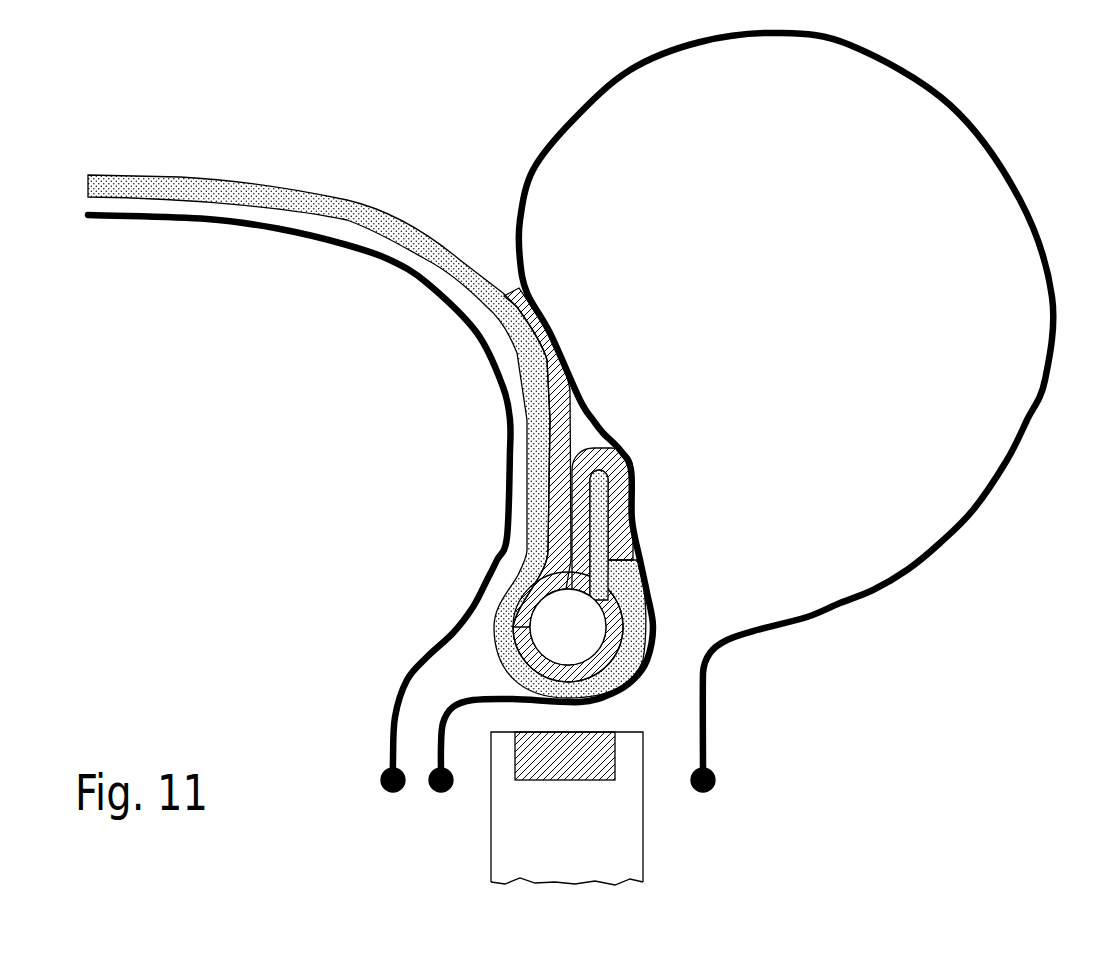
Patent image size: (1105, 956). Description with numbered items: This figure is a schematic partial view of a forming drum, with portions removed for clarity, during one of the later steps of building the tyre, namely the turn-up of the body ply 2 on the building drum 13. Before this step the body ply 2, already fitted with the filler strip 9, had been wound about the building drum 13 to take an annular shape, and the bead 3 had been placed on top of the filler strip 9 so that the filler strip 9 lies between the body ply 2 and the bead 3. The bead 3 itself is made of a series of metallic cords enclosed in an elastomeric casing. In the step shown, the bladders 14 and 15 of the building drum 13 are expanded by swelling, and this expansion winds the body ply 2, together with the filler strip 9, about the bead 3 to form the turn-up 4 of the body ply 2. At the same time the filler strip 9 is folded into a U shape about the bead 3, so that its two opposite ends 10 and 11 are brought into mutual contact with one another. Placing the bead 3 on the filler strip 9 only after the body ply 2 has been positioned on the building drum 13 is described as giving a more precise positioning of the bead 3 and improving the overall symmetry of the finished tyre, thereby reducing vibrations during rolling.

The body ply 2 is at (390, 220).
The bead 3 is at (568, 625).
The turn-up 4 is at (407, 415).
The filler strip 9 is at (575, 432).
The end of the filler strip 10 is at (510, 290).
The end of the filler strip 11 is at (640, 513).
The building drum 13 is at (397, 853).
The bladder 14 is at (173, 220).
The bladder 15 is at (803, 38).